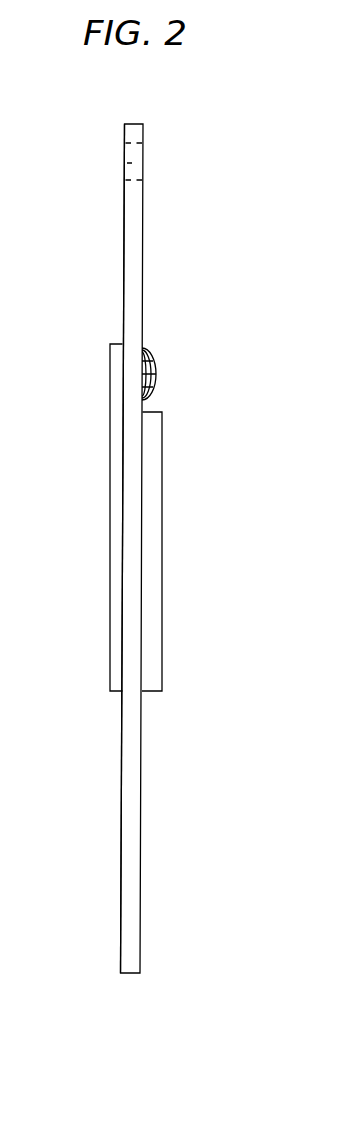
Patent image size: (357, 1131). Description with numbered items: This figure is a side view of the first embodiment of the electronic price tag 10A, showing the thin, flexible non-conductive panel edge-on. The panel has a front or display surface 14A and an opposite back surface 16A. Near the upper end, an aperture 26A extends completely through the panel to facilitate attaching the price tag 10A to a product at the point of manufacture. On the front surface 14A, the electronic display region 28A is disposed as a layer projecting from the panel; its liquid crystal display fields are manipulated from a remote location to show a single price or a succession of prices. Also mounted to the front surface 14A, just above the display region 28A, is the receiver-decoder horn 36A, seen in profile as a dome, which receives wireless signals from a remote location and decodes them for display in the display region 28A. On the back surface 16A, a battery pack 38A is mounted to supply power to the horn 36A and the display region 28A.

The price tag 10A is at (158, 203).
The front surface 14A is at (143, 271).
The back surface 16A is at (124, 248).
The aperture 26A is at (122, 161).
The electronic display region 28A is at (163, 690).
The receiver-decoder horn 36A is at (150, 375).
The battery pack 38A is at (110, 690).